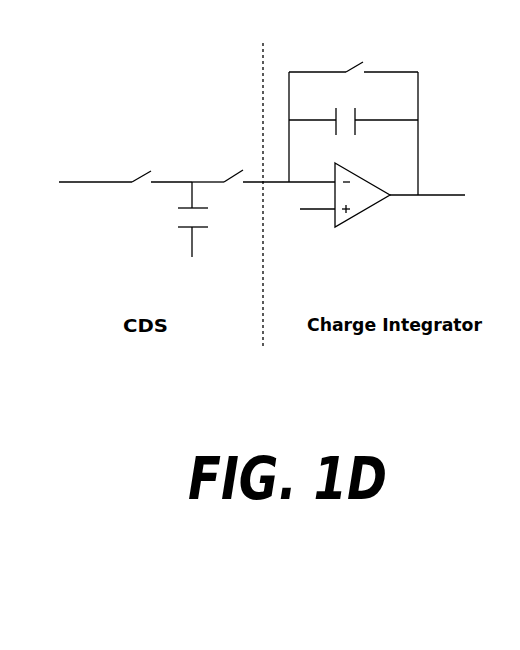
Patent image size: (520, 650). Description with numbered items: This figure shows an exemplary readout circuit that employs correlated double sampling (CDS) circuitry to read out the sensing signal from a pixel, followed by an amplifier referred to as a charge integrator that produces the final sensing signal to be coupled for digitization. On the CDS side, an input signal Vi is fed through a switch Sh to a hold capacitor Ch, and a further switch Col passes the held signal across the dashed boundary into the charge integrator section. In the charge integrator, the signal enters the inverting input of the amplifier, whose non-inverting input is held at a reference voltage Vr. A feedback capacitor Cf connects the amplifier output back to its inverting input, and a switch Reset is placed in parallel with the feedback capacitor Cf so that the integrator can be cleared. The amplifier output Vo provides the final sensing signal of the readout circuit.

The input voltage Vi is at (92, 200).
The sample-and-hold switch Sh is at (159, 159).
The hold capacitor Ch is at (176, 219).
The column switch Col is at (263, 159).
The reset switch Reset is at (353, 115).
The feedback capacitor Cf is at (353, 113).
The reference voltage Vr is at (309, 224).
The output voltage Vo is at (434, 212).